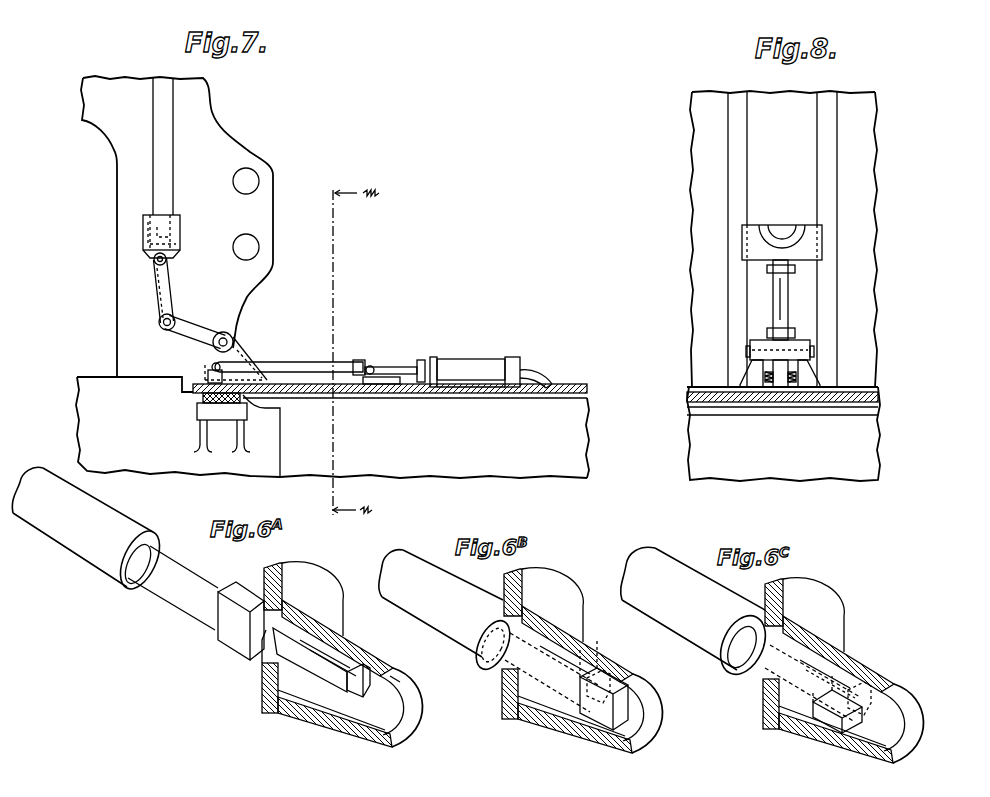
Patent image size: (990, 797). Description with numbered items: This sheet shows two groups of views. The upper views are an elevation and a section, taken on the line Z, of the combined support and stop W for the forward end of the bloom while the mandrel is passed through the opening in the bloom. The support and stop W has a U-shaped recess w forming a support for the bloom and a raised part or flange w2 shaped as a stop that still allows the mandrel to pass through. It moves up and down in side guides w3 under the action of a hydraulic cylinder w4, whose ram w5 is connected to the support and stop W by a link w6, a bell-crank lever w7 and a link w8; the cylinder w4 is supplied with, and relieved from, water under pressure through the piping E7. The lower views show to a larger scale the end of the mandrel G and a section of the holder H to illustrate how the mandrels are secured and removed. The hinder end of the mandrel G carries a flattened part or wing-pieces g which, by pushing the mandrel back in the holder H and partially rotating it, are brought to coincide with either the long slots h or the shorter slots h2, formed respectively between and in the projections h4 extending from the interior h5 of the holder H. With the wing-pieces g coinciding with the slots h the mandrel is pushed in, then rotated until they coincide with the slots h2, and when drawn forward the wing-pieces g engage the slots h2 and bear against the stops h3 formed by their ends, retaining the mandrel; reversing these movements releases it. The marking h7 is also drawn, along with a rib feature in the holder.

In FIG. 7, the recess w is at (170, 237).
In FIG. 8, the recess w is at (798, 240).
In FIG. 7, the raised part or flange w2 is at (160, 230).
In FIG. 8, the raised part or flange w2 is at (772, 227).
In FIG. 7, the side guides w3 is at (171, 153).
In FIG. 8, the side guides w3 is at (733, 174).
In FIG. 7, the hydraulic cylinder w4 is at (470, 365).
In FIG. 7, the ram w5 is at (170, 300).
In FIG. 8, the ram w5 is at (772, 310).
In FIG. 7, the link w6 is at (287, 370).
In FIG. 8, the link w6 is at (787, 390).
In FIG. 7, the bell-crank lever w7 is at (212, 353).
In FIG. 8, the bell-crank lever w7 is at (792, 357).
In FIG. 7, the link w8 is at (160, 287).
In FIG. 7, the combined support and stop W is at (173, 236).
In FIG. 8, the combined support and stop W is at (782, 231).
In FIG. 7, the piping E7 is at (527, 370).
In FIG. 7, the section line Z is at (354, 353).
In FIG. 6A, the mandrel G is at (115, 548).
In FIG. 6B, the mandrel G is at (441, 603).
In FIG. 6C, the mandrel G is at (693, 608).
In FIG. 6A, the flattened part or wing-pieces g is at (238, 596).
In FIG. 6B, the flattened part or wing-pieces g is at (613, 677).
In FIG. 6C, the flattened part or wing-pieces g is at (887, 697).
In FIG. 6A, the holder H is at (347, 640).
In FIG. 6B, the holder H is at (580, 638).
In FIG. 6C, the holder H is at (843, 645).
In FIG. 6A, the slots h is at (337, 737).
In FIG. 6B, the slots h is at (503, 670).
In FIG. 6C, the slots h is at (768, 630).
In FIG. 6A, the slots h2 is at (383, 673).
In FIG. 6C, the slots h2 is at (868, 682).
In FIG. 6A, the stops h3 is at (353, 663).
In FIG. 6B, the stops h3 is at (593, 663).
In FIG. 6C, the stops h3 is at (853, 670).
In FIG. 6A, the projections h4 is at (362, 697).
In FIG. 6B, the projections h4 is at (620, 707).
In FIG. 6C, the projections h4 is at (873, 717).
In FIG. 6A, the interior h5 is at (398, 722).
In FIG. 6B, the interior h5 is at (640, 737).
In FIG. 6C, the interior h5 is at (900, 740).
In FIG. 6A, the rib h7 is at (372, 667).